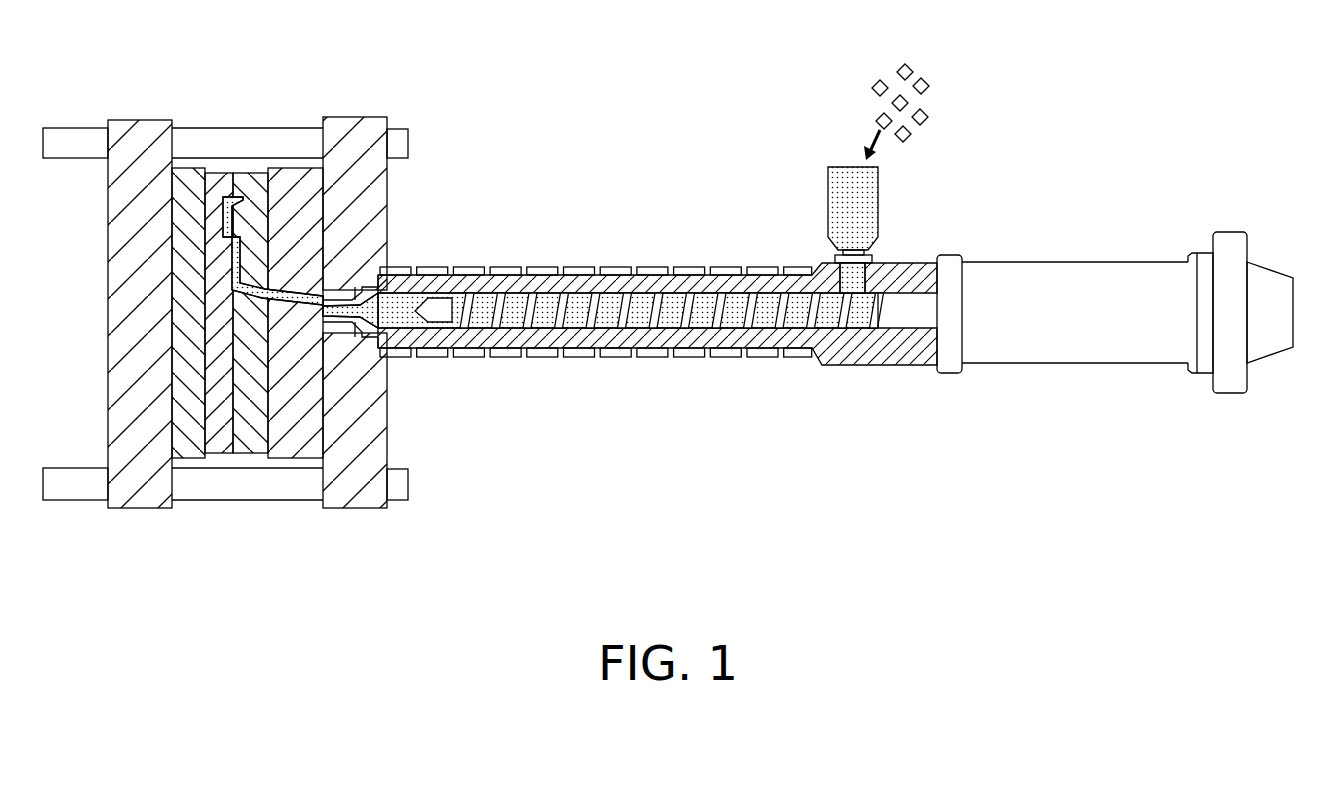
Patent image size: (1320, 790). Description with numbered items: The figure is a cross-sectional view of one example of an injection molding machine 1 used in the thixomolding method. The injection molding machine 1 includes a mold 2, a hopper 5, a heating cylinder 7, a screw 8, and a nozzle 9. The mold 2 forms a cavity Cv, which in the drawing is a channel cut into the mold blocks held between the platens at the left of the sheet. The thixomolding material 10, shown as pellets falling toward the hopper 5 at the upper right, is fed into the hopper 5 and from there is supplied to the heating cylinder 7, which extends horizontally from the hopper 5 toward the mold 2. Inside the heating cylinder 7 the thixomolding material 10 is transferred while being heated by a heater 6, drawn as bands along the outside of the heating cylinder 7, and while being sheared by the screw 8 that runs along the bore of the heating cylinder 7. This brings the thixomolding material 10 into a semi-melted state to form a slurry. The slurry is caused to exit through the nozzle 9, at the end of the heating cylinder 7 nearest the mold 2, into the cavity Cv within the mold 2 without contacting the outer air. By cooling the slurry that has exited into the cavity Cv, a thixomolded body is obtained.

The injection molding machine 1 is at (668, 324).
The mold 2 is at (225, 332).
The hopper 5 is at (851, 166).
The heater 6 is at (728, 357).
The heating cylinder 7 is at (655, 350).
The screw 8 is at (434, 300).
The nozzle 9 is at (354, 333).
The thixomolding material 10 is at (938, 98).
The cavity Cv is at (223, 195).